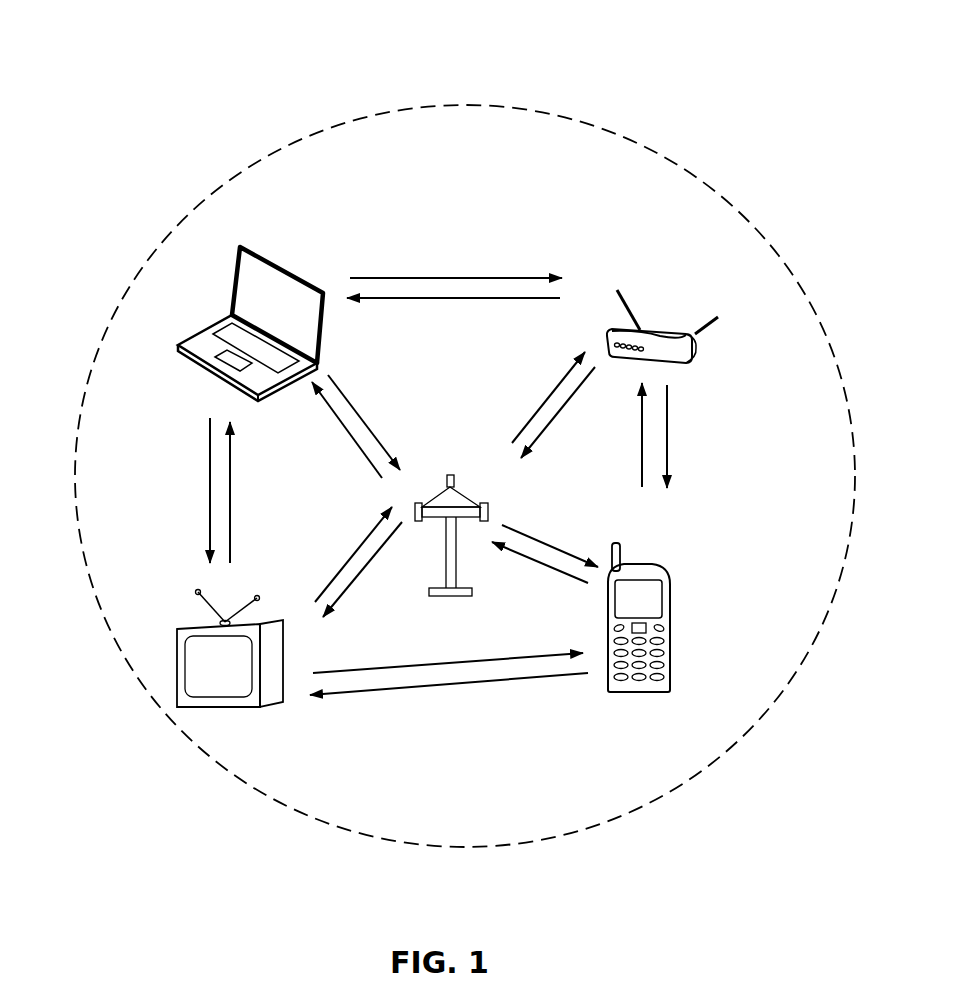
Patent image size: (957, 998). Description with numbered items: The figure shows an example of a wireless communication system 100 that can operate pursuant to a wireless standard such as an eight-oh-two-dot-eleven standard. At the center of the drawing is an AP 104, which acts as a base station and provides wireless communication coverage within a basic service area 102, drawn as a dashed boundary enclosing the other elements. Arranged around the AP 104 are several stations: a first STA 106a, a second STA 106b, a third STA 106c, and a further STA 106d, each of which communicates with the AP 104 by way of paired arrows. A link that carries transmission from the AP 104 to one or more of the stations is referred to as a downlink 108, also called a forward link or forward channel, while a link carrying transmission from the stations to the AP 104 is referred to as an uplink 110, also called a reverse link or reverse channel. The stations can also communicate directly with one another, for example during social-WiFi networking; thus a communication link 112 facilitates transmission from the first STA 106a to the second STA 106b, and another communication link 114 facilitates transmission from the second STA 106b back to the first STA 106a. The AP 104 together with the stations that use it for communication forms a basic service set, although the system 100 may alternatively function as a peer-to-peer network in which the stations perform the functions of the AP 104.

The wireless communication system 100 is at (747, 50).
The basic service area 102 is at (793, 272).
The AP 104 is at (450, 475).
The first STA 106a is at (645, 563).
The second STA 106b is at (283, 622).
The third STA 106c is at (250, 247).
The STA 106d is at (676, 330).
The downlink 108 is at (525, 540).
The uplink 110 is at (525, 545).
The communication link 112 is at (400, 668).
The communication link 114 is at (428, 688).